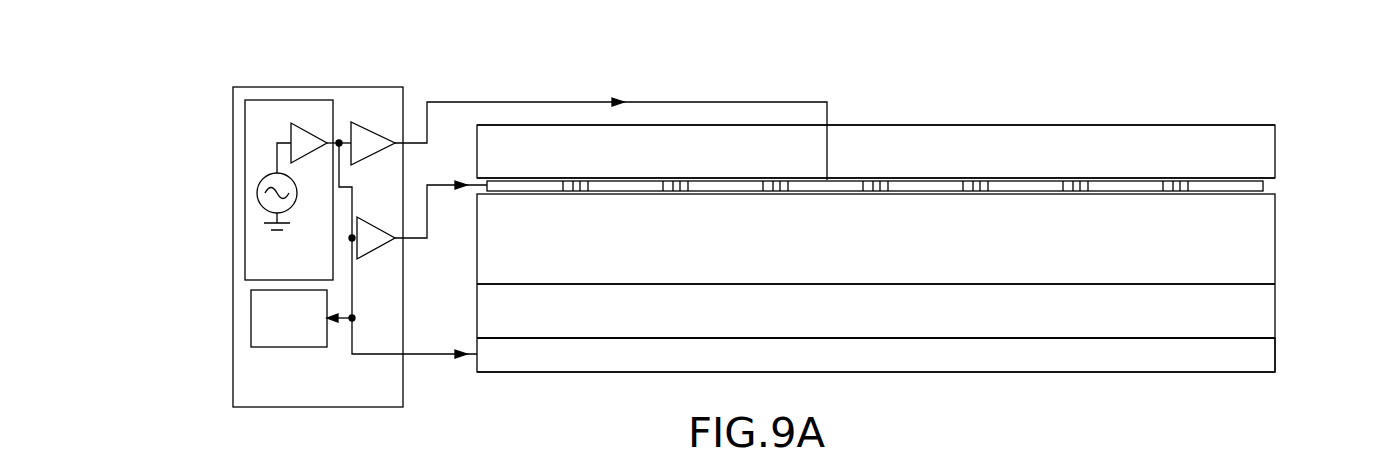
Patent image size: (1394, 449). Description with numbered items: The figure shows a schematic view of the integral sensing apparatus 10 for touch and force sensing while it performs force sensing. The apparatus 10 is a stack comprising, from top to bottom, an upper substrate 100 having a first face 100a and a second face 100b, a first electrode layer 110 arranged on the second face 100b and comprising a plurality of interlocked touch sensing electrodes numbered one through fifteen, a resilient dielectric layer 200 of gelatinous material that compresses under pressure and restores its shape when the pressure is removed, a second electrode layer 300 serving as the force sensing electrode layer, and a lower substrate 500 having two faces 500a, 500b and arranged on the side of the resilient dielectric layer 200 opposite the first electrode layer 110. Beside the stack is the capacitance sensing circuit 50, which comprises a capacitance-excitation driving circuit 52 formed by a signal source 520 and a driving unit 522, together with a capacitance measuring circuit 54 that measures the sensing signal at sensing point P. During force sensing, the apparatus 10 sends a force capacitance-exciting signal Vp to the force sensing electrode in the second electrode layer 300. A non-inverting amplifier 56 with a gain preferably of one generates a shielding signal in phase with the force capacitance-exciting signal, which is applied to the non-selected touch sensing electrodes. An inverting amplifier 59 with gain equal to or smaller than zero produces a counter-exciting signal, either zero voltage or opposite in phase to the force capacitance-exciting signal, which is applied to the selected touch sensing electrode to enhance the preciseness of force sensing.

The integral sensing apparatus 10 is at (1018, 57).
The capacitance sensing circuit 50 is at (318, 87).
The capacitance-excitation driving circuit 52 is at (245, 190).
The signal source 520 is at (258, 184).
The driving unit 522 is at (312, 128).
The capacitance measuring circuit 54 is at (245, 318).
The non-inverting amplifier 56 is at (377, 250).
The inverting amplifier 59 is at (377, 155).
The upper substrate 100 is at (1272, 152).
The first face 100a is at (1252, 125).
The second face 100b is at (1187, 181).
The first electrode layer 110 is at (1267, 186).
The resilient dielectric layer 200 is at (1272, 238).
The second electrode layer 300 is at (1227, 365).
The lower substrate 500 is at (1272, 312).
The face of lower substrate 500a is at (1252, 284).
The face of lower substrate 500b is at (1252, 338).